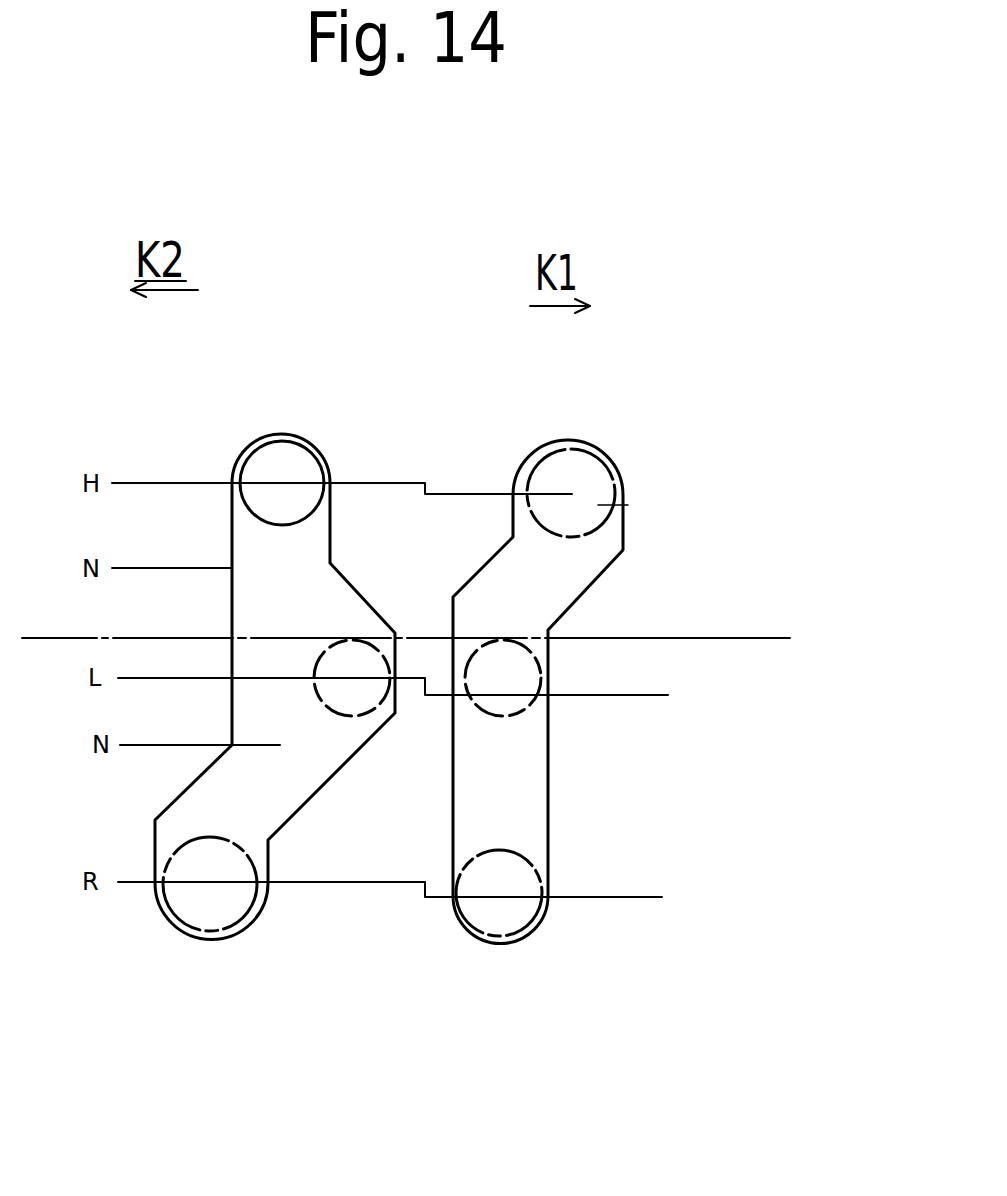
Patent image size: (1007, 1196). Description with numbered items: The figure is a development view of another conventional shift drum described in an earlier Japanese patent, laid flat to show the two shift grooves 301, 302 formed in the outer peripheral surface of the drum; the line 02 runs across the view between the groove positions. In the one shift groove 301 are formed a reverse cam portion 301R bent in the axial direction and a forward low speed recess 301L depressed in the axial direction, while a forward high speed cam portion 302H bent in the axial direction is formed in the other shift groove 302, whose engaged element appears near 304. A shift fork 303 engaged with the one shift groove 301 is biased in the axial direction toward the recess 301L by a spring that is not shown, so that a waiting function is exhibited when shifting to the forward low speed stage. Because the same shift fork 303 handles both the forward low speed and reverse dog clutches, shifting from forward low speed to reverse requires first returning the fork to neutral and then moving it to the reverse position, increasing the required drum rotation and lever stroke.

The shift groove 301 is at (330, 393).
The shift groove 302 is at (625, 432).
The shift fork 303 is at (273, 462).
The engagement hole of second shift member 304 is at (628, 505).
The reverse cam portion 301R is at (238, 928).
The forward low speed recess 301L is at (383, 732).
The forward high speed cam portion 302H is at (527, 472).
The center axis O2 02 is at (677, 640).